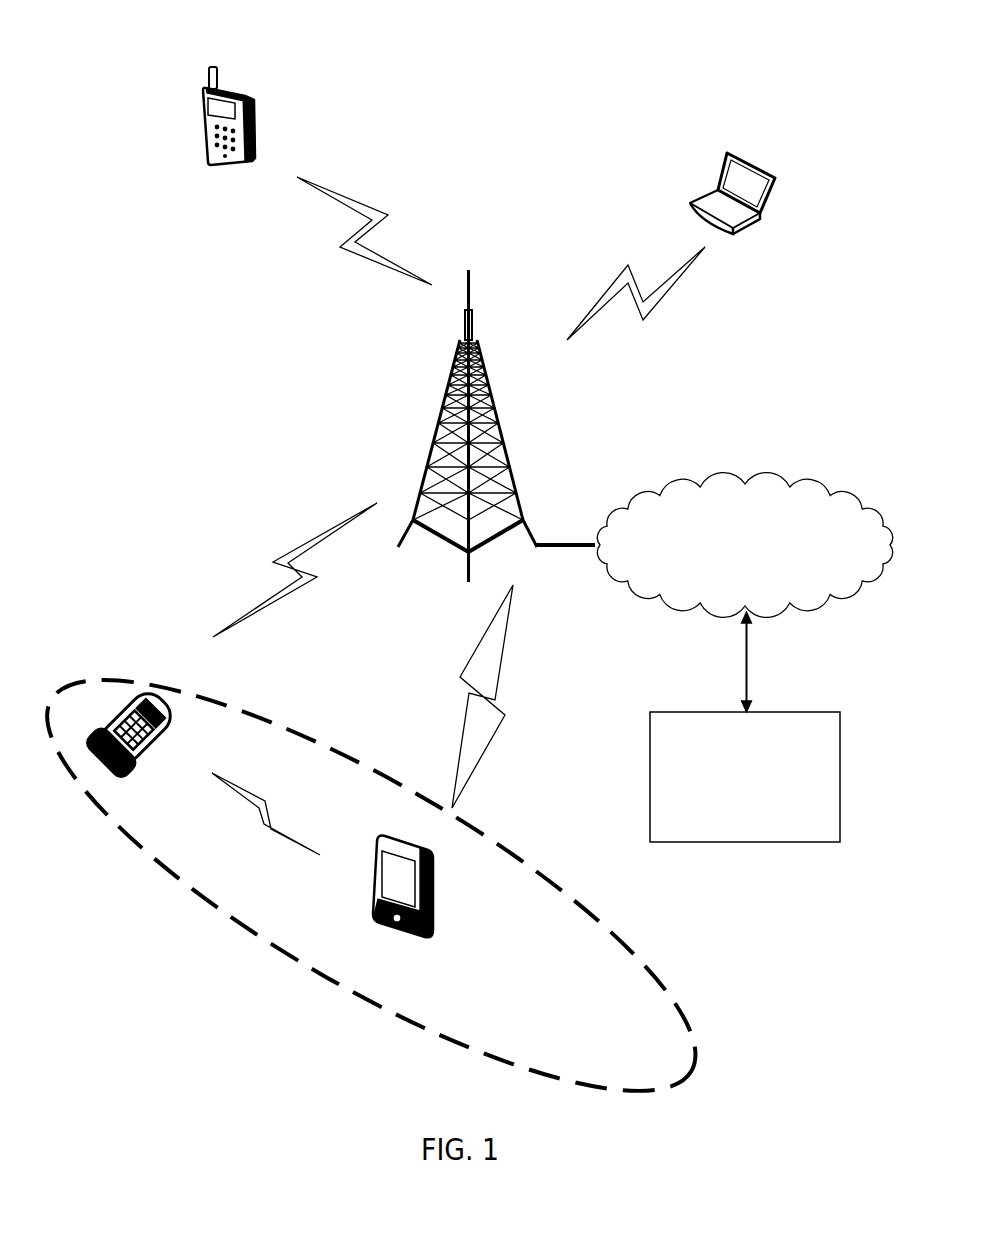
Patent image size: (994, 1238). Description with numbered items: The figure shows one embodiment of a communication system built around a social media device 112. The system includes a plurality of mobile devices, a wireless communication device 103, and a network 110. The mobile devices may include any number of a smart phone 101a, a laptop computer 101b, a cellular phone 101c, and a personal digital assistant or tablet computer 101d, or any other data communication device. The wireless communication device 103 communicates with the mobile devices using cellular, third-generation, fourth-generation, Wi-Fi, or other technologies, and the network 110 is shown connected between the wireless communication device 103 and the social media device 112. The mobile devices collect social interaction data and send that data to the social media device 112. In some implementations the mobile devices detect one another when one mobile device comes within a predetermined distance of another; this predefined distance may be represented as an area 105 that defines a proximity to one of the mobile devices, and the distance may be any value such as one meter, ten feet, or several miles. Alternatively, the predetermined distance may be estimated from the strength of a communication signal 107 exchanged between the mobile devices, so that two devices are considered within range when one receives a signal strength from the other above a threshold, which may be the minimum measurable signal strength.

The smart phone 101a is at (215, 66).
The laptop computer 101b is at (734, 152).
The cellular phone 101c is at (155, 690).
The personal digital assistant or tablet computer 101d is at (433, 888).
The wireless communication device 103 is at (447, 403).
The area 105 is at (195, 898).
The communication signal 107 is at (237, 797).
The network 110 is at (763, 558).
The social media device 112 is at (650, 716).